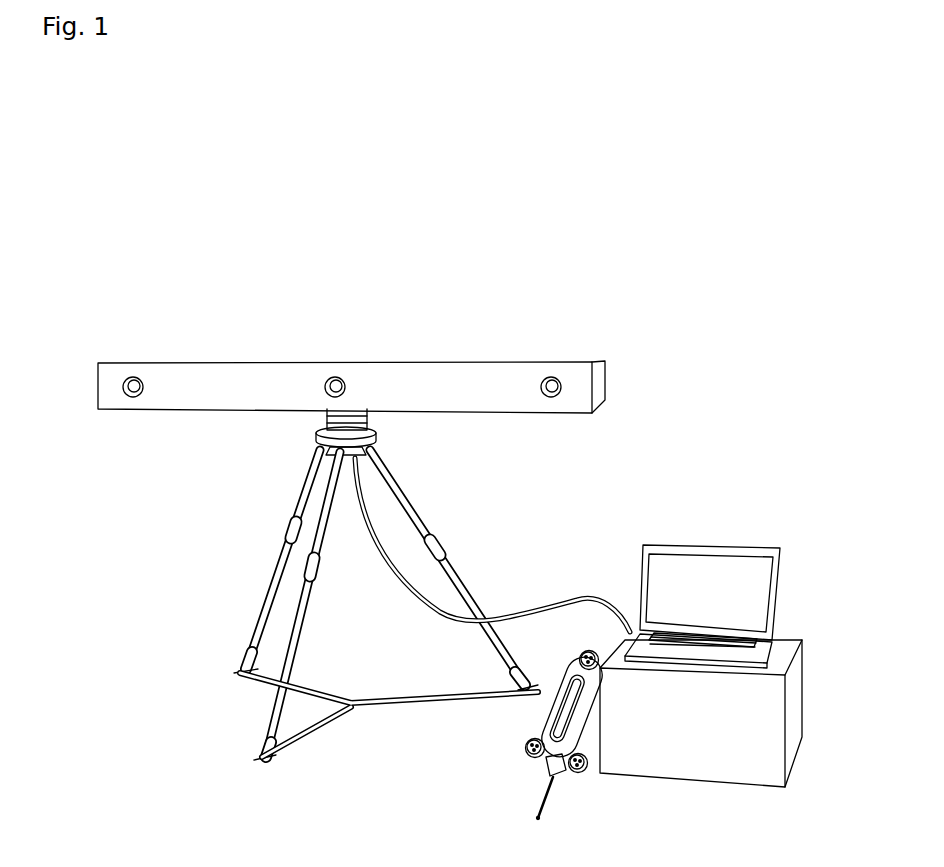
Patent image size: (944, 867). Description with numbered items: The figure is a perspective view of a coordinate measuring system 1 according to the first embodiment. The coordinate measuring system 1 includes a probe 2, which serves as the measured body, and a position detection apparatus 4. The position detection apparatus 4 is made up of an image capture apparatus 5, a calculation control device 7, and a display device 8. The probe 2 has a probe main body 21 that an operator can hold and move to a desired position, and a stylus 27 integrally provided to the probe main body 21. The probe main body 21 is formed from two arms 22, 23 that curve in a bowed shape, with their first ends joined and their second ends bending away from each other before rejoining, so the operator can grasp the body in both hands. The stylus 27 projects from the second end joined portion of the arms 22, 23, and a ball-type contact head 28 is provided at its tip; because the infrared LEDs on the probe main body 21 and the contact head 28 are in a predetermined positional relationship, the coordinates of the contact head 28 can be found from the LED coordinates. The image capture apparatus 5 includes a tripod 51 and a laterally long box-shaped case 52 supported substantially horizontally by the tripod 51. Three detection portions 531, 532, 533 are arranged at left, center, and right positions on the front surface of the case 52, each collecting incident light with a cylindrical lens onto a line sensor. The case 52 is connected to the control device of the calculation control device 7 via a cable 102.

The coordinate measuring system 1 is at (137, 197).
The probe 2 is at (555, 738).
The position detection apparatus 4 is at (709, 375).
The image capture apparatus 5 is at (207, 291).
The calculation control device 7 is at (795, 700).
The display device 8 is at (780, 589).
The probe main body 21 is at (573, 680).
The arm 22 is at (540, 716).
The arm 23 is at (592, 735).
The stylus 27 is at (551, 785).
The contact head 28 is at (537, 819).
The tripod 51 is at (463, 572).
The case 52 is at (443, 400).
The cable 102 is at (577, 598).
The detection portion 531 is at (131, 378).
The detection portion 532 is at (328, 380).
The detection portion 533 is at (549, 378).